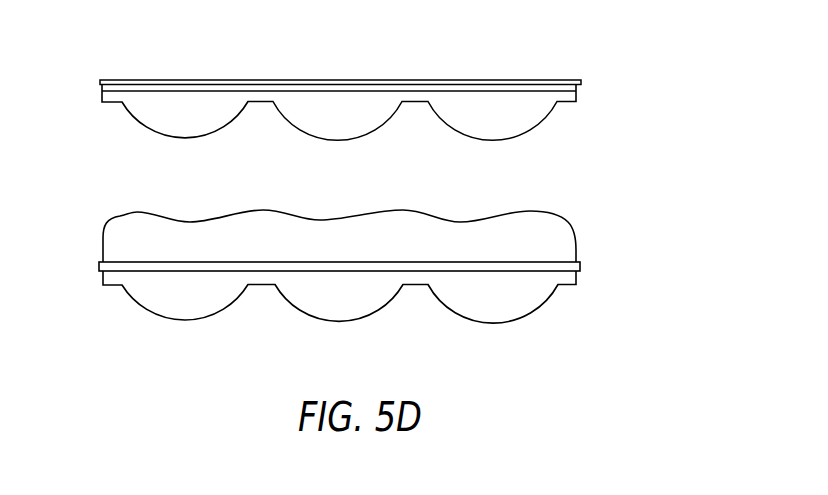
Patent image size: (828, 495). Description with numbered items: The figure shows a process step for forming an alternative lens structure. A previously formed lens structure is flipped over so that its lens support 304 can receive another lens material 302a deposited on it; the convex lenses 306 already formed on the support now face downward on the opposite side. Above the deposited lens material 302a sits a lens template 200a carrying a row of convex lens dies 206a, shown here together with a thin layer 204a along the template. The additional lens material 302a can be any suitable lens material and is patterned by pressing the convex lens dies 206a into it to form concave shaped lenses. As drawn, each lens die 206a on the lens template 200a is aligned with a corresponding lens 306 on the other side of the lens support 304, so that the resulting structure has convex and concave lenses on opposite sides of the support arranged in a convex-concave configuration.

The lens template 200a is at (595, 77).
The thin layer / substrate 204a is at (99, 81).
The convex lens die 206a is at (202, 138).
The lens material 302a is at (568, 238).
The lens support 304 is at (580, 263).
The lens 306 is at (202, 305).